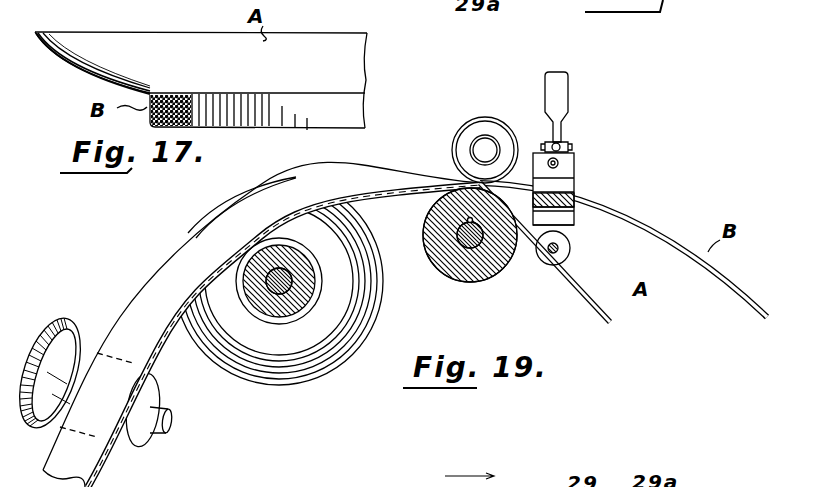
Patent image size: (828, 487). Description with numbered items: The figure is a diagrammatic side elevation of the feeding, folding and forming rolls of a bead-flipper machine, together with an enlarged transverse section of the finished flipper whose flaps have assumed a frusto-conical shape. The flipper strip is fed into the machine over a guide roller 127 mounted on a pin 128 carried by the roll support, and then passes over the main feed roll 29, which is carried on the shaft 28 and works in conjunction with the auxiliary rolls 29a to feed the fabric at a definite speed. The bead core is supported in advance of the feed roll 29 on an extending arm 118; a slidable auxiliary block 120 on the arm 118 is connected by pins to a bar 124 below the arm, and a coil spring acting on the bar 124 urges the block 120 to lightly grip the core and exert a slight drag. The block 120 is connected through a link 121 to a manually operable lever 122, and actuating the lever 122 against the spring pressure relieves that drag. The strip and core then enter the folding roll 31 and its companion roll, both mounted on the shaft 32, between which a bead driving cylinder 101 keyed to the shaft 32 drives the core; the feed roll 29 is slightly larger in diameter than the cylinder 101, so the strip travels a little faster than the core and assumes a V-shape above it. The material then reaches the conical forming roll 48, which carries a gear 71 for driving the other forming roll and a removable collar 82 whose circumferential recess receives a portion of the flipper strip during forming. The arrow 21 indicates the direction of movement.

The direction of movement arrow 21 is at (448, 476).
The gear 71 is at (48, 321).
The removable collar 82 is at (123, 447).
The forming roll 48 is at (95, 343).
The folding roll 31 is at (297, 348).
The bead driving cylinder 101 is at (262, 300).
The shaft 32 is at (287, 294).
The shaft 28 is at (457, 248).
The main feed roll 29 is at (472, 275).
The auxiliary rolls 29a is at (470, 131).
The auxiliary block 120 is at (577, 186).
The extending arm 118 is at (573, 205).
The bar 124 is at (563, 218).
The link 121 is at (567, 147).
The manually operable lever 122 is at (560, 104).
The pin 128 is at (543, 261).
The guide roller 127 is at (560, 265).